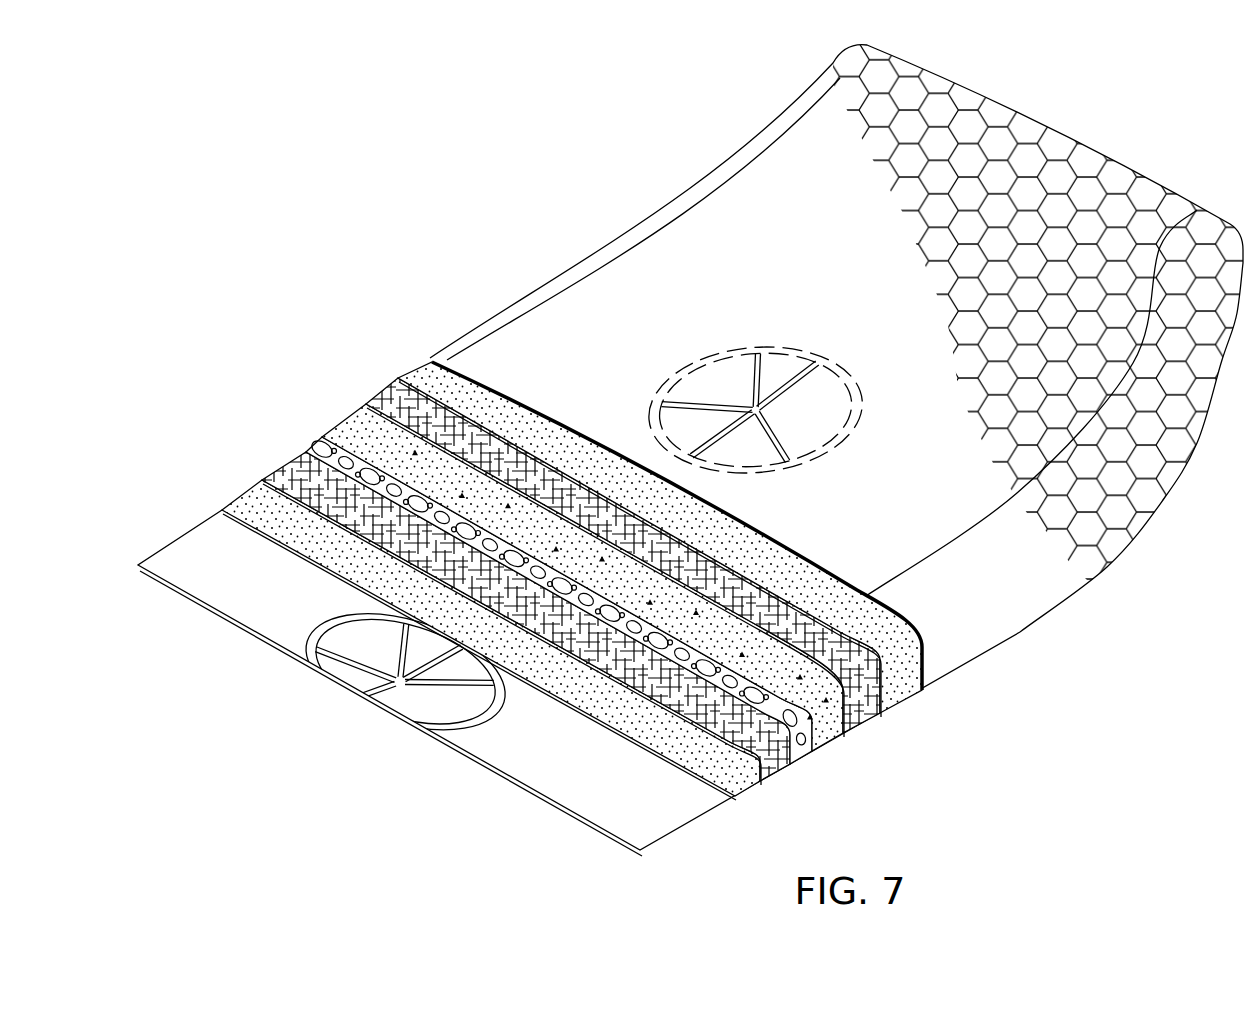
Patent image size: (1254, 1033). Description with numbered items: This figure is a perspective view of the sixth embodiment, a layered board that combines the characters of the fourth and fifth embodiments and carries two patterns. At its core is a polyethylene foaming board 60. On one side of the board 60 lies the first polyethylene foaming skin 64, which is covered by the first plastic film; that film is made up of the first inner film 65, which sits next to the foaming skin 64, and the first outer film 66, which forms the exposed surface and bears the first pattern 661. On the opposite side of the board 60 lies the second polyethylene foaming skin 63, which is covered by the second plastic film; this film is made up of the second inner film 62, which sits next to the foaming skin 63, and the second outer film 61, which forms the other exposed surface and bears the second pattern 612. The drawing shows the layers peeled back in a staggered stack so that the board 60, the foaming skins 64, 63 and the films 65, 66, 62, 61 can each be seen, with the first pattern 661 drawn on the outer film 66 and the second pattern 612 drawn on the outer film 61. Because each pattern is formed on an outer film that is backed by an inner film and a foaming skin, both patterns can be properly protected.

The polyethylene foaming board 60 is at (668, 430).
The second outer film 61 is at (497, 764).
The second pattern 612 is at (353, 676).
The second inner film 62 is at (240, 500).
The second polyethylene foaming skin 63 is at (287, 468).
The first polyethylene foaming skin 64 is at (367, 403).
The first inner film 65 is at (437, 360).
The first outer film 66 is at (809, 345).
The first pattern 661 is at (795, 358).